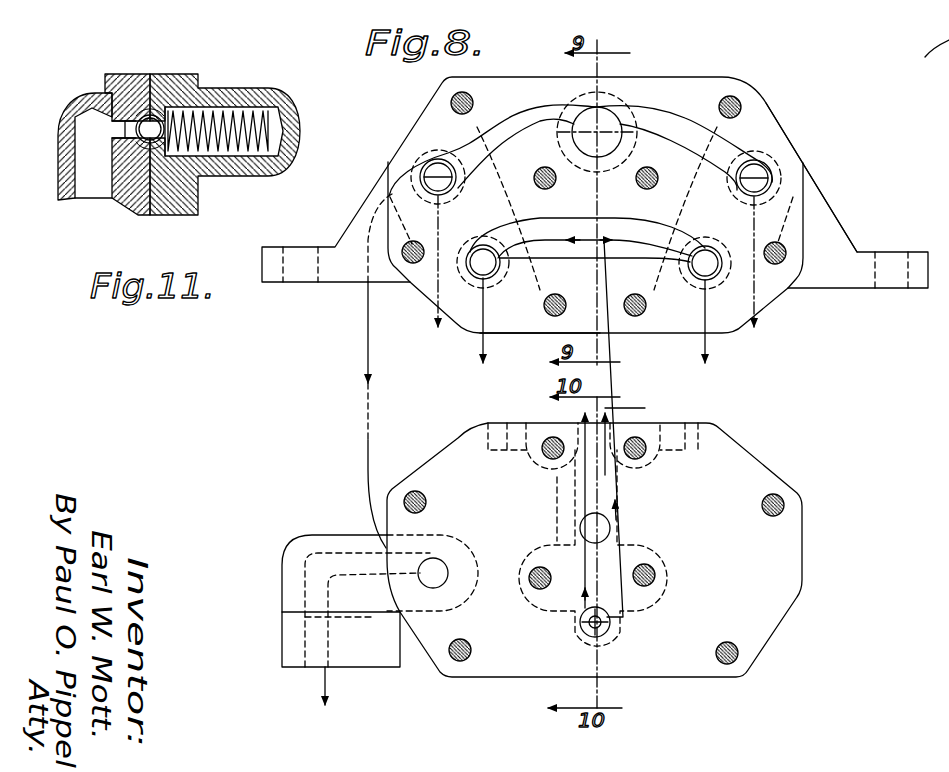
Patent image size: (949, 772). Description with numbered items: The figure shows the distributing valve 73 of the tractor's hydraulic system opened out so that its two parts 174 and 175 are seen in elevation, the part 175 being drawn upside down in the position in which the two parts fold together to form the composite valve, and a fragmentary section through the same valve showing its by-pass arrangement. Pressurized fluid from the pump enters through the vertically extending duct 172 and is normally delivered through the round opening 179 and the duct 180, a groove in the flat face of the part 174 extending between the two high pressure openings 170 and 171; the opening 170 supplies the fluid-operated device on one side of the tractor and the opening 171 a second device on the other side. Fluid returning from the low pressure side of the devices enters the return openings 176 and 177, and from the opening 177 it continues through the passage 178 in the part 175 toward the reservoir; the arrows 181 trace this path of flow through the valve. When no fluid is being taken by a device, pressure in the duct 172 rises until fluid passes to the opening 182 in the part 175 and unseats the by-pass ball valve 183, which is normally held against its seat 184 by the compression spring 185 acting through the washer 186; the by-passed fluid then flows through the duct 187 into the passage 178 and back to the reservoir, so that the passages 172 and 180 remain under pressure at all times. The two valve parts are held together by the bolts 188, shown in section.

In FIG. 8, the distributing valve 73 is at (683, 76).
In FIG. 8, the high pressure opening 170 is at (712, 275).
In FIG. 8, the high pressure opening 171 is at (476, 274).
In FIG. 8, the vertically extending duct 172 is at (556, 489).
In FIG. 11, the vertically extending duct 172 is at (88, 197).
In FIG. 8, the distributing valve part 174 is at (798, 93).
In FIG. 11, the distributing valve part 174 is at (233, 178).
In FIG. 8, the distributing valve part 175 is at (805, 553).
In FIG. 11, the distributing valve part 175 is at (137, 215).
In FIG. 8, the return opening 176 is at (770, 173).
In FIG. 8, the return opening 177 is at (434, 176).
In FIG. 8, the passage 178 is at (335, 556).
In FIG. 8, the round opening 179 is at (580, 528).
In FIG. 8, the duct 180 is at (633, 234).
In FIG. 8, the arrows 181 is at (560, 332).
In FIG. 8, the opening 182 is at (604, 630).
In FIG. 11, the opening 182 is at (120, 115).
In FIG. 11, the by-pass ball valve 183 is at (155, 117).
In FIG. 11, the seat 184 is at (123, 127).
In FIG. 11, the compression spring 185 is at (235, 110).
In FIG. 11, the washer 186 is at (165, 118).
In FIG. 8, the duct 187 is at (512, 118).
In FIG. 8, the bolts 188 is at (720, 105).